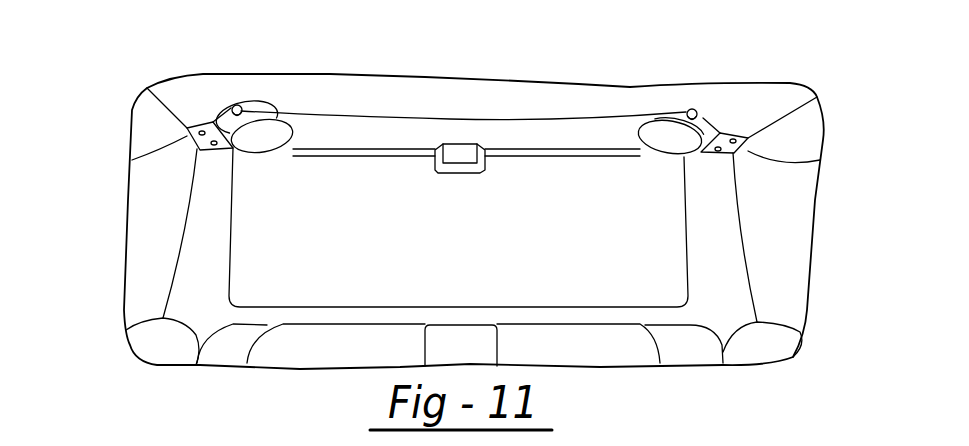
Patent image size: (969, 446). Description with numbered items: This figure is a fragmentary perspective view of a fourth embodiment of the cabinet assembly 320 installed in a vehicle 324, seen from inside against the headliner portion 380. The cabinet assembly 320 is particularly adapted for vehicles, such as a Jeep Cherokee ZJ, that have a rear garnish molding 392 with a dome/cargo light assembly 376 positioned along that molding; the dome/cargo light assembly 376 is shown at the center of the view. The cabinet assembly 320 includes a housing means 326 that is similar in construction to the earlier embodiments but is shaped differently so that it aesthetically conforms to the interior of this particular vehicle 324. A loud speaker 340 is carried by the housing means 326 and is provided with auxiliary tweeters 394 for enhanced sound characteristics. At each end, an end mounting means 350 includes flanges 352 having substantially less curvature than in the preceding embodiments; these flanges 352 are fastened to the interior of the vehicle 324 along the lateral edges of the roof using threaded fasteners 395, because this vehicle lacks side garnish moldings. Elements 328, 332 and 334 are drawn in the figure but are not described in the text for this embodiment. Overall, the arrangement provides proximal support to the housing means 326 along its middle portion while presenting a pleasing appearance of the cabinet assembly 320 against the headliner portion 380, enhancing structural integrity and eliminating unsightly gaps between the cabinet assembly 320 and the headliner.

The cabinet assembly 320 is at (385, 108).
The vehicle 324 is at (565, 93).
The housing means 326 is at (575, 150).
The seat back panel edge 328 is at (455, 125).
The cross rod 332 is at (350, 137).
The cable 334 is at (186, 133).
The loud speaker 340 is at (262, 160).
The end mounting means 350 is at (217, 156).
The flanges 352 is at (193, 126).
The dome/cargo light assembly 376 is at (445, 174).
The headliner portion 380 is at (530, 98).
The rear garnish molding 392 is at (515, 160).
The auxiliary tweeters 394 is at (238, 105).
The threaded fasteners 395 is at (196, 148).